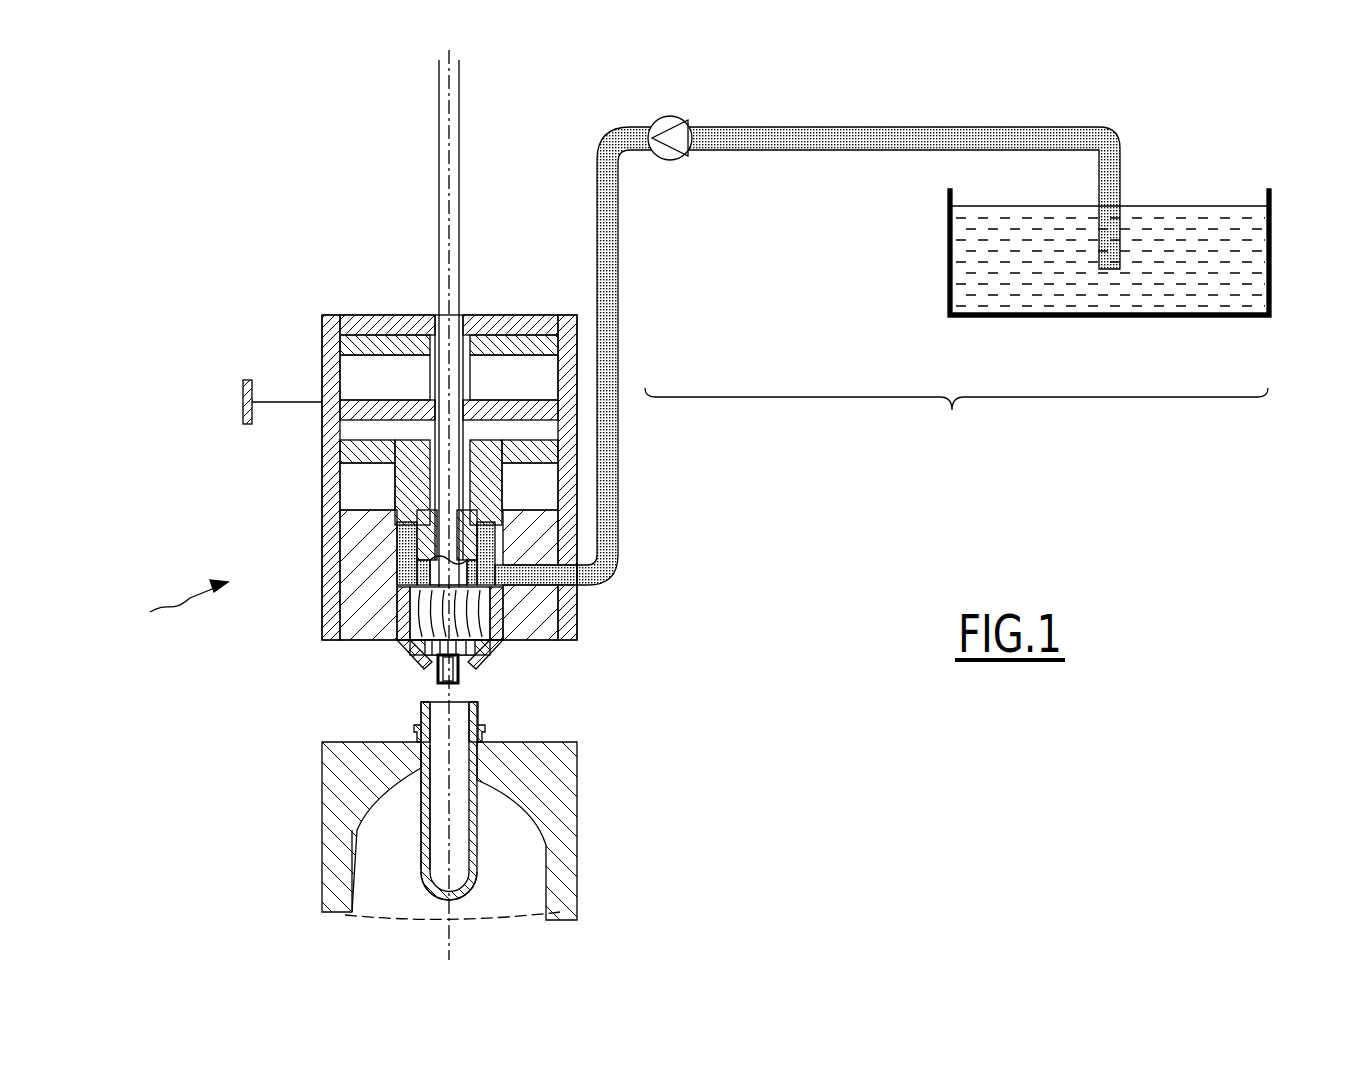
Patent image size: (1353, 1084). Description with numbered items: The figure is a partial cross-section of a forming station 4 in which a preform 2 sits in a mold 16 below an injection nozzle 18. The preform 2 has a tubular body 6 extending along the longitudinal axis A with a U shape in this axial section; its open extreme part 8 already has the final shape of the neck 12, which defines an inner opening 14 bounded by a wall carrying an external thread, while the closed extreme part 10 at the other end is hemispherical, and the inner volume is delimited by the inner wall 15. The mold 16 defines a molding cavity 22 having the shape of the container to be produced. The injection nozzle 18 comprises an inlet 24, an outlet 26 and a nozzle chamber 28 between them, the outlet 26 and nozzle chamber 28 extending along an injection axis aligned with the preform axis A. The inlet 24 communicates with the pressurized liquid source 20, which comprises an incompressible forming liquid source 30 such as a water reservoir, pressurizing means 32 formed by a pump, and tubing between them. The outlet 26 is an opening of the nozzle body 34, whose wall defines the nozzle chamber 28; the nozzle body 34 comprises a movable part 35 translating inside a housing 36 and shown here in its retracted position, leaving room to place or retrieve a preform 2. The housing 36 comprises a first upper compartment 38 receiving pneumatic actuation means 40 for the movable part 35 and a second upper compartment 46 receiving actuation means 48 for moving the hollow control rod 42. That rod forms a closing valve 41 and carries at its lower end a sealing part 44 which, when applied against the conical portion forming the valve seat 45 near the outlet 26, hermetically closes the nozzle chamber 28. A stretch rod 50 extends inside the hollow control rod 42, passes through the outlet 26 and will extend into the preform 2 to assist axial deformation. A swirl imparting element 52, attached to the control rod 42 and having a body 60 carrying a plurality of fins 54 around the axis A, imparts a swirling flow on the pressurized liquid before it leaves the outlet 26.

The preform 2 is at (420, 823).
The forming station 4 is at (180, 603).
The body 6 is at (470, 780).
The open extreme part 8 is at (470, 700).
The closed extreme part 10 is at (450, 897).
The neck 12 is at (480, 718).
The inner opening 14 is at (415, 710).
The inner wall 15 is at (430, 865).
The mold 16 is at (570, 865).
The injection nozzle 18 is at (322, 455).
The pressurized liquid source 20 is at (924, 315).
The molding cavity 22 is at (380, 880).
The inlet 24 is at (560, 578).
The outlet 26 is at (430, 672).
The nozzle chamber 28 is at (475, 608).
The incompressible forming liquid source 30 is at (1200, 290).
The pressurizing means 32 is at (667, 116).
The nozzle body 34 is at (405, 600).
The movable part 35 is at (500, 648).
The housing 36 is at (535, 525).
The first upper compartment 38 is at (350, 480).
The actuation means 40 is at (543, 473).
The closing valve 41 is at (405, 488).
The hollow control rod 42 is at (505, 546).
The sealing part 44 is at (470, 665).
The valve seat 45 is at (420, 660).
The second upper compartment 46 is at (345, 362).
The actuation means 48 is at (385, 345).
The stretch rod 50 is at (459, 132).
The swirl imparting element 52 is at (535, 596).
The fins 54 is at (485, 640).
The body 60 is at (459, 239).
The longitudinal axis A is at (459, 183).